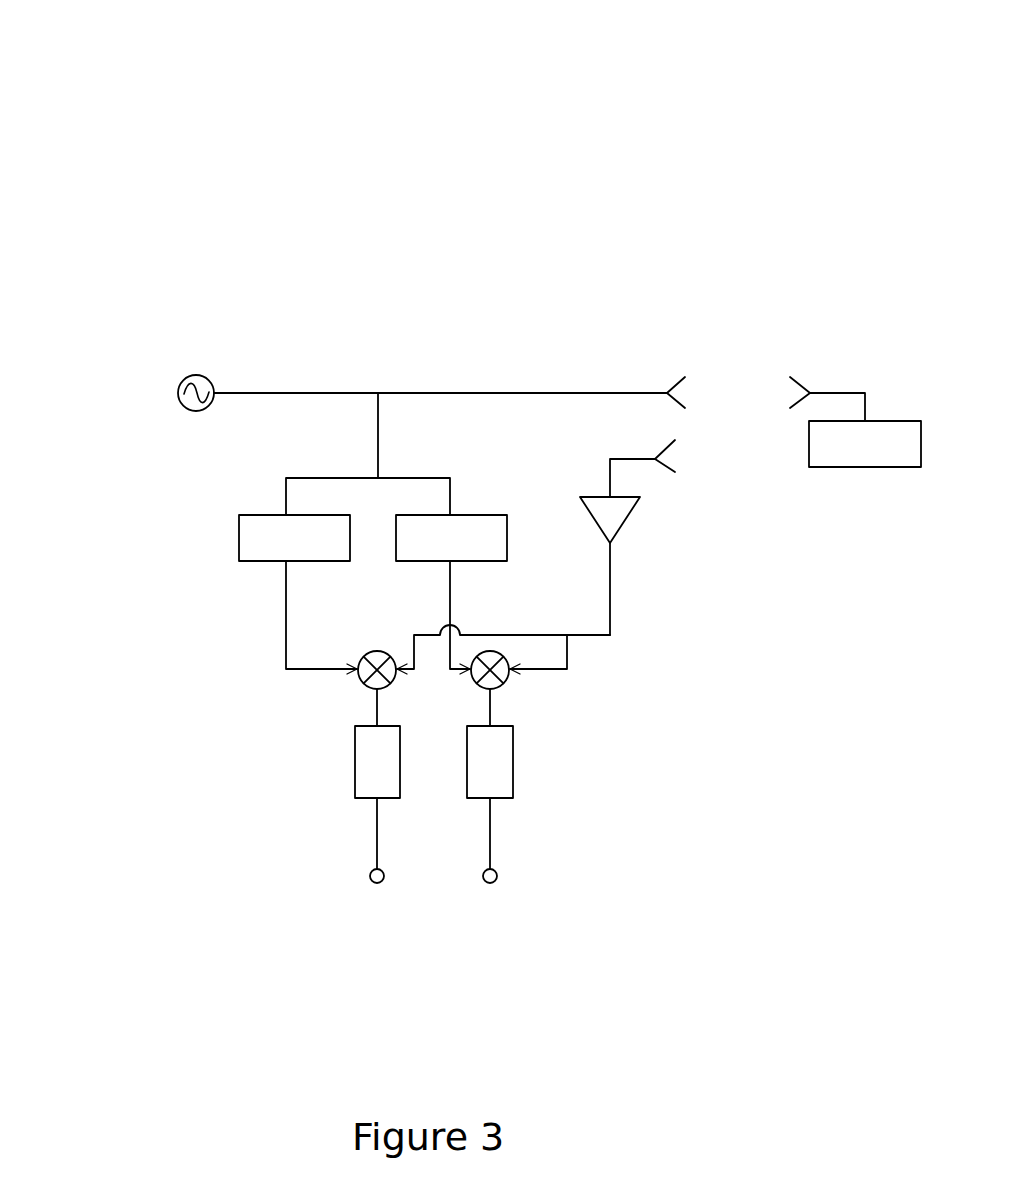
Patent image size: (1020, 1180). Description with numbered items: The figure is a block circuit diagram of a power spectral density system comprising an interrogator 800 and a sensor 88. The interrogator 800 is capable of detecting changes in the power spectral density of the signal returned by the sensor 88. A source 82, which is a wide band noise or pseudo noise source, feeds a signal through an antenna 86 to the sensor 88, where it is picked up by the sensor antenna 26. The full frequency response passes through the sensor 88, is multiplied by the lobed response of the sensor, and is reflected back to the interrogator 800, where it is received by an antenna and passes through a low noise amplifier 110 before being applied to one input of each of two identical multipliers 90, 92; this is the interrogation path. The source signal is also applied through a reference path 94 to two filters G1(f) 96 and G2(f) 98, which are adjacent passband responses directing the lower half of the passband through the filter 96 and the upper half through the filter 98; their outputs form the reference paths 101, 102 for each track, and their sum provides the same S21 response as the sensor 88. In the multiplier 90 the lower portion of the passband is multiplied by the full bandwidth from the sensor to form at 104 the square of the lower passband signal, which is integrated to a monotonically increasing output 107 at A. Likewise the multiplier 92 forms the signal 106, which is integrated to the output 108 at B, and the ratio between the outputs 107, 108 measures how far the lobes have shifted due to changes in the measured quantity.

The interrogator 800 is at (421, 270).
The source 82 is at (185, 365).
The antenna 86 is at (693, 365).
The reference path 94 is at (401, 432).
The filter G1(f) 96 is at (237, 532).
The filter G2(f) 98 is at (511, 542).
The low noise amplifier (LNA) 110 is at (629, 517).
The reference path 101 is at (282, 635).
The reference path 102 is at (446, 652).
The multiplier 90 is at (353, 681).
The multiplier 92 is at (512, 678).
The squared lower passband signal 104 is at (371, 705).
The signal 106 is at (501, 704).
The output at A 107 is at (368, 882).
The output at B 108 is at (506, 880).
The antenna 26 is at (842, 378).
The sensor 88 is at (878, 475).